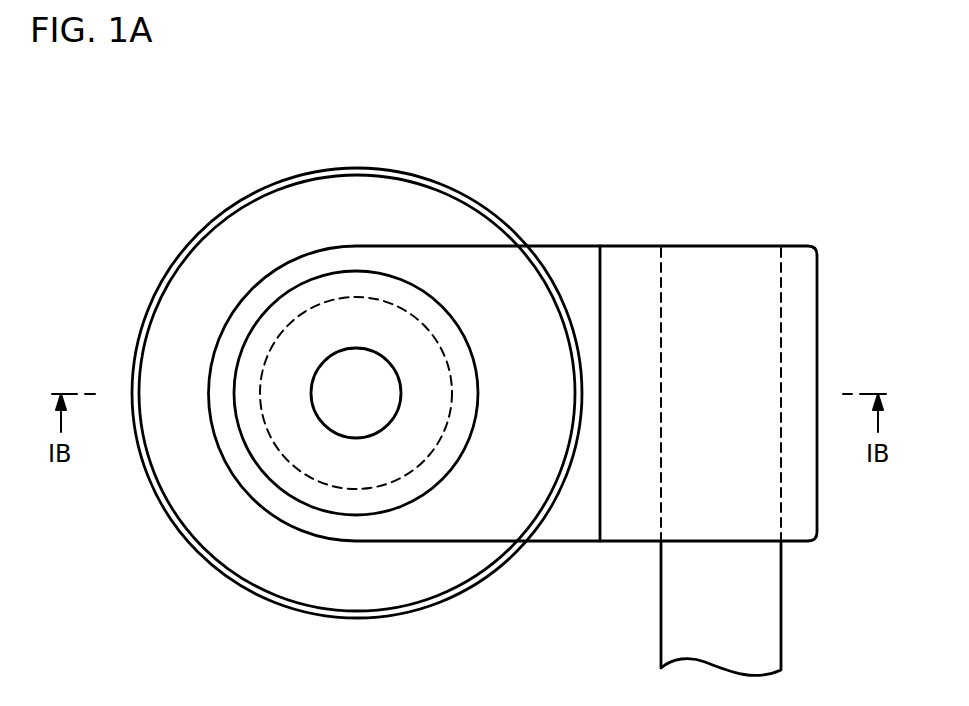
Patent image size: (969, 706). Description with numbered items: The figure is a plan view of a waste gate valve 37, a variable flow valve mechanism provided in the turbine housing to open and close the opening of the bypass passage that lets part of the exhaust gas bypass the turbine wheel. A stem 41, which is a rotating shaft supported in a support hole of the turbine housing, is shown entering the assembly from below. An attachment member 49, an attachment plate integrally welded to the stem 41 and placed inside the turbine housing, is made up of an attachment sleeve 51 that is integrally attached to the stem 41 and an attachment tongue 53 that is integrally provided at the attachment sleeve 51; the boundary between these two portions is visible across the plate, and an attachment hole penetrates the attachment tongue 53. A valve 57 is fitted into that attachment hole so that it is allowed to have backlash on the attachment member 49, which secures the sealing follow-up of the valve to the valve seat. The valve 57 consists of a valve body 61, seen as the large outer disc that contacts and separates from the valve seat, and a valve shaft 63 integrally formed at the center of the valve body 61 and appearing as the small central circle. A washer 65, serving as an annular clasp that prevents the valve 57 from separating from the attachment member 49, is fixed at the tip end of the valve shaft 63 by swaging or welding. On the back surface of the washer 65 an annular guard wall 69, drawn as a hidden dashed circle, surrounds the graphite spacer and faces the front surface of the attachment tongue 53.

The waste gate valve 37 is at (457, 147).
The stem 41 is at (772, 618).
The attachment member 49 is at (642, 178).
The attachment sleeve 51 is at (632, 253).
The attachment tongue 53 is at (558, 253).
The valve 57 is at (218, 132).
The valve body 61 is at (199, 260).
The valve shaft 63 is at (351, 365).
The washer 65 is at (265, 455).
The guard wall 69 is at (345, 492).